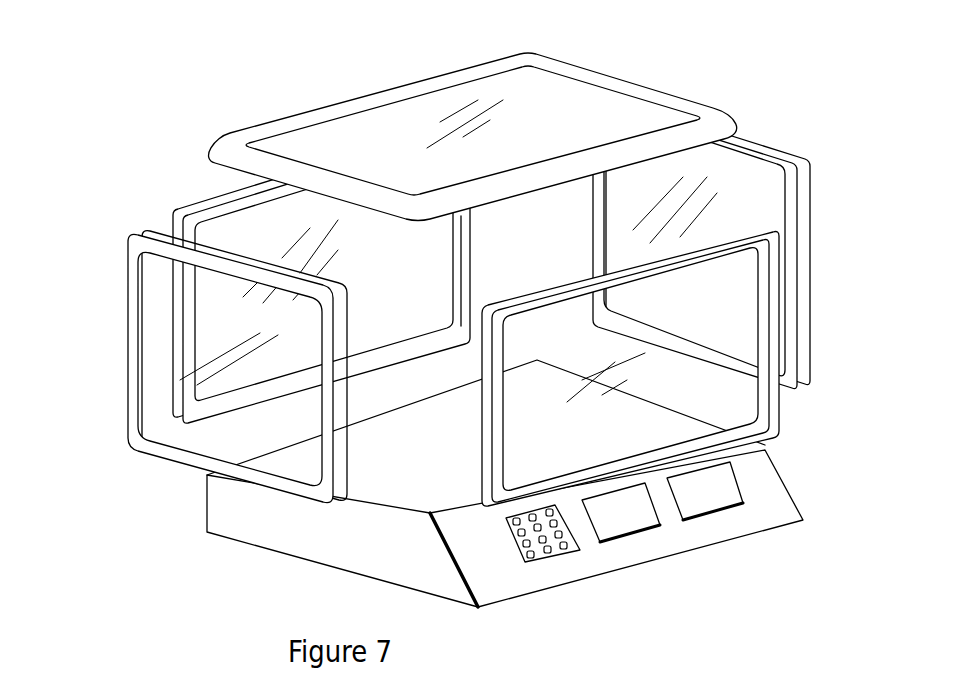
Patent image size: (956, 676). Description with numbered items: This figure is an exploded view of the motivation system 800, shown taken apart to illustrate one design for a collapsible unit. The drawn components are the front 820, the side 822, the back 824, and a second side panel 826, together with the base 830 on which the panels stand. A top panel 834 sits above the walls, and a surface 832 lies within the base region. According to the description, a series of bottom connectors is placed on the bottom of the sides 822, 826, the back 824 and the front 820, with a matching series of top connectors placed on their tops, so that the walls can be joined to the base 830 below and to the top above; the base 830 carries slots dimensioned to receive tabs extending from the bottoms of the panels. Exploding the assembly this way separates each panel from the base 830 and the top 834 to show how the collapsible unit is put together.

The motivation system 800 is at (695, 76).
The front 820 is at (772, 422).
The side 822 is at (133, 342).
The back 824 is at (171, 212).
The rear right transparent panel 826 is at (807, 270).
The base 830 is at (262, 518).
The base top surface / platform 832 is at (486, 414).
The top panel 834 is at (409, 88).